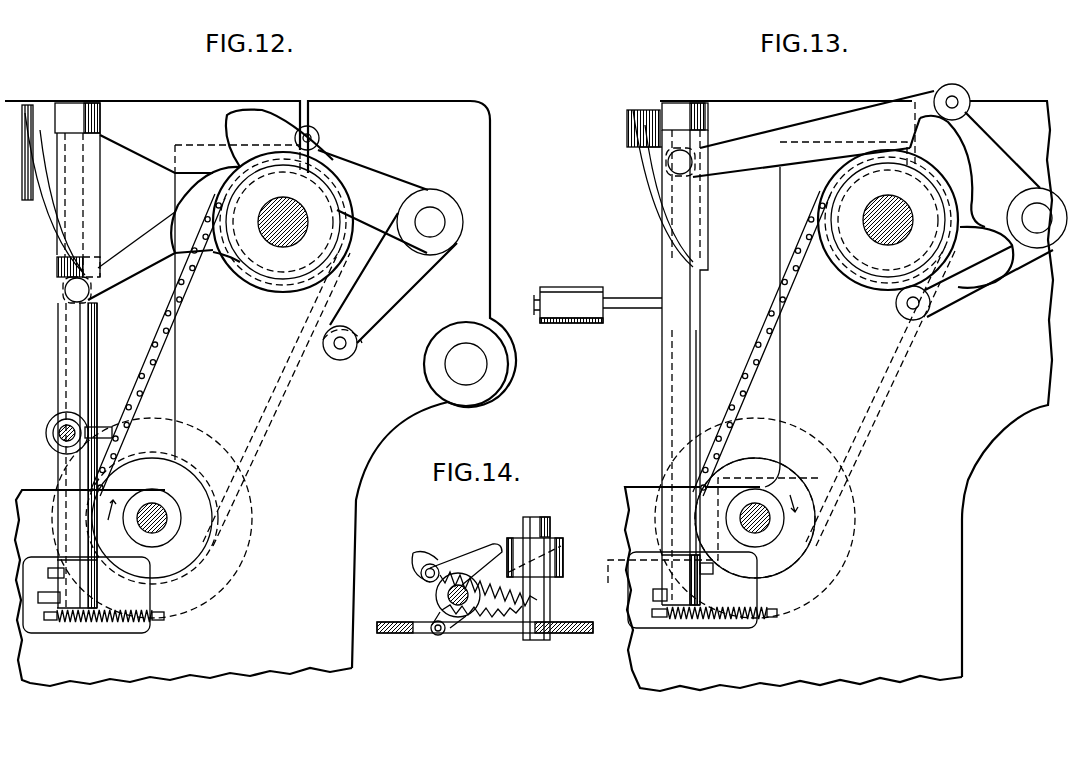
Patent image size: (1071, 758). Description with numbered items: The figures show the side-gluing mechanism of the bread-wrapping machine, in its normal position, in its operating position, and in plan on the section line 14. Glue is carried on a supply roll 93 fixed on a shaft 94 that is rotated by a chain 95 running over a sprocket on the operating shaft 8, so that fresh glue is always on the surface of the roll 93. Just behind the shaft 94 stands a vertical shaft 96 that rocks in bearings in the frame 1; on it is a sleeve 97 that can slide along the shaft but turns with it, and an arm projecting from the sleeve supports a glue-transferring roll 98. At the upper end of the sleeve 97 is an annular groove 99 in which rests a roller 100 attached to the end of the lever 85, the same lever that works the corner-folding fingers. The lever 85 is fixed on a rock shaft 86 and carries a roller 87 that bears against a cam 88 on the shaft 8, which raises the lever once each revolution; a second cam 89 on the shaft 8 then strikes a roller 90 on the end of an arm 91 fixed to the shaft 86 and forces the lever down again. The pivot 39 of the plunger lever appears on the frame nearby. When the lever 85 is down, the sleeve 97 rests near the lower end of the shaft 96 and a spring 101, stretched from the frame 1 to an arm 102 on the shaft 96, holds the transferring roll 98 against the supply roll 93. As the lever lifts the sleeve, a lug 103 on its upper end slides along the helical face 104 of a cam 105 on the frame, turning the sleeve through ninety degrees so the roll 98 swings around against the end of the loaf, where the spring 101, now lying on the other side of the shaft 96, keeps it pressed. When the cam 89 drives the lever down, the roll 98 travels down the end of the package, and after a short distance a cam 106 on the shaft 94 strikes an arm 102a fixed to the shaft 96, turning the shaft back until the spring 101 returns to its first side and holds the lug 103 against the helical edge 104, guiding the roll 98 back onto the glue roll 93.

In FIG. 12, the frame 1 is at (260, 393).
In FIG. 14, the frame 1 is at (396, 635).
In FIG. 13, the frame 1 is at (839, 396).
In FIG. 12, the operating shaft 8 is at (272, 240).
In FIG. 13, the operating shaft 8 is at (878, 238).
In FIG. 13, the section line 14— 14 is at (715, 538).
In FIG. 12, the pivot 39 is at (466, 364).
In FIG. 12, the lever 85 is at (194, 297).
In FIG. 13, the lever 85 is at (813, 289).
In FIG. 12, the rock shaft 86 is at (430, 222).
In FIG. 13, the rock shaft 86 is at (1037, 218).
In FIG. 12, the roller 87 is at (319, 139).
In FIG. 13, the roller 87 is at (968, 94).
In FIG. 12, the cam 88 is at (299, 206).
In FIG. 13, the cam 88 is at (975, 169).
In FIG. 12, the cam 89 is at (279, 138).
In FIG. 13, the cam 89 is at (985, 257).
In FIG. 12, the roller 90 is at (352, 348).
In FIG. 13, the roller 90 is at (925, 313).
In FIG. 12, the arm 91 is at (393, 278).
In FIG. 13, the arm 91 is at (1002, 268).
In FIG. 12, the glue roll 93 is at (252, 497).
In FIG. 13, the glue roll 93 is at (712, 432).
In FIG. 12, the shaft 94 is at (148, 504).
In FIG. 14, the shaft 94 is at (542, 528).
In FIG. 13, the shaft 94 is at (753, 504).
In FIG. 12, the chain 95 is at (268, 402).
In FIG. 13, the chain 95 is at (753, 374).
In FIG. 12, the vertical shaft 96 is at (70, 473).
In FIG. 14, the vertical shaft 96 is at (438, 598).
In FIG. 13, the vertical shaft 96 is at (675, 362).
In FIG. 12, the sleeve 97 is at (58, 374).
In FIG. 13, the sleeve 97 is at (662, 266).
In FIG. 12, the glue-transferring roll 98 is at (48, 425).
In FIG. 13, the glue-transferring roll 98 is at (598, 305).
In FIG. 12, the annular groove 99 is at (67, 300).
In FIG. 13, the annular groove 99 is at (668, 162).
In FIG. 12, the roller 100 is at (64, 291).
In FIG. 13, the roller 100 is at (667, 168).
In FIG. 12, the spring 101 is at (136, 620).
In FIG. 14, the spring 101 is at (498, 550).
In FIG. 13, the spring 101 is at (697, 612).
In FIG. 12, the arm 102 is at (42, 604).
In FIG. 14, the arm 102 is at (422, 576).
In FIG. 13, the arm 102 is at (658, 603).
In FIG. 12, the arm 102a is at (50, 568).
In FIG. 14, the arm 102a is at (495, 556).
In FIG. 13, the arm 102a is at (708, 575).
In FIG. 12, the lug 103 is at (57, 268).
In FIG. 13, the lug 103 is at (627, 140).
In FIG. 12, the cam face 104 is at (33, 210).
In FIG. 13, the cam face 104 is at (650, 213).
In FIG. 12, the cam 105 is at (78, 158).
In FIG. 13, the cam 105 is at (642, 157).
In FIG. 12, the cam 106 is at (170, 462).
In FIG. 14, the cam 106 is at (565, 550).
In FIG. 13, the cam 106 is at (800, 592).